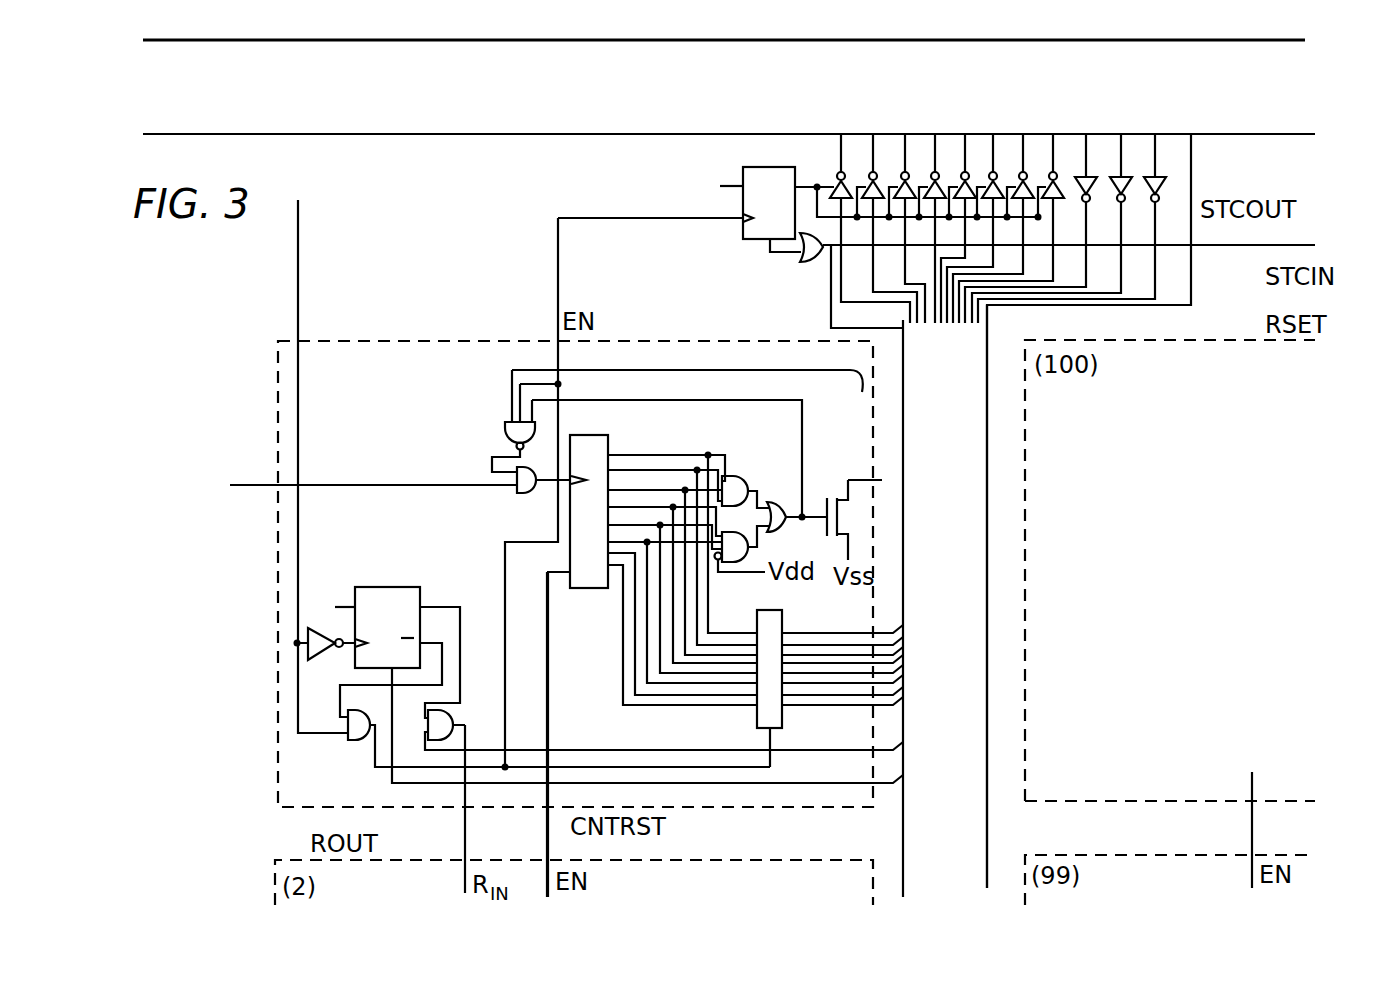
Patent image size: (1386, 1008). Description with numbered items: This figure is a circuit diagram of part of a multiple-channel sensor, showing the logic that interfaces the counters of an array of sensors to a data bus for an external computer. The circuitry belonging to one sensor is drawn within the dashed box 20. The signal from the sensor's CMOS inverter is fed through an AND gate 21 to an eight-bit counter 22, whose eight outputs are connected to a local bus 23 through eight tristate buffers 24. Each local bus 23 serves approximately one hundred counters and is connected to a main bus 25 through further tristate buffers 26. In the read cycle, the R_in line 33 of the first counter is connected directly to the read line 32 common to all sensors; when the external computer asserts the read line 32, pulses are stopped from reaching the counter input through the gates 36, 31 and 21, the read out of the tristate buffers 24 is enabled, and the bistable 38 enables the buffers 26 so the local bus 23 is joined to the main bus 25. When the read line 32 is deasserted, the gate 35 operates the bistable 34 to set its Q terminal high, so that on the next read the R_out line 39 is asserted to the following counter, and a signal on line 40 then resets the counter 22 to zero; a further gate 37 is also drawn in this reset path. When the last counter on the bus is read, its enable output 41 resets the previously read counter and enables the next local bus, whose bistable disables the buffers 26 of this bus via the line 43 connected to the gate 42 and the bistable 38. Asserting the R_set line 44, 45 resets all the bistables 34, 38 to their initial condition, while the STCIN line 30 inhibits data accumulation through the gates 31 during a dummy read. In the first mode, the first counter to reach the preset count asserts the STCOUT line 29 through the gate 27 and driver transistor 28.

The dashed box 20 is at (390, 333).
The AND gate 21 is at (517, 492).
The 8 bit counter 22 is at (600, 447).
The local bus 23 is at (978, 516).
The tristate buffers 24 is at (784, 718).
The main bus 25 is at (817, 109).
The tristate buffers 26 is at (1175, 123).
The gate 27 is at (762, 476).
The driver transistor 28 is at (848, 480).
The STCOUT line 29 is at (882, 480).
The STCIN line 30 is at (1234, 266).
The gate 31 is at (505, 434).
The read line 32 is at (598, 745).
The R_in line 33 is at (298, 243).
The bistable 34 is at (398, 597).
The gate 35 is at (305, 636).
The gate 36 is at (345, 738).
The AND gate 37 is at (430, 735).
The bistable 38 is at (748, 240).
The R_out line 39 is at (465, 830).
The line 40 is at (548, 842).
The enable output 41 is at (1252, 826).
The gate 42 is at (800, 262).
The line 43 is at (1304, 243).
The R_set line 44 is at (831, 312).
The R_set line 45 is at (843, 787).